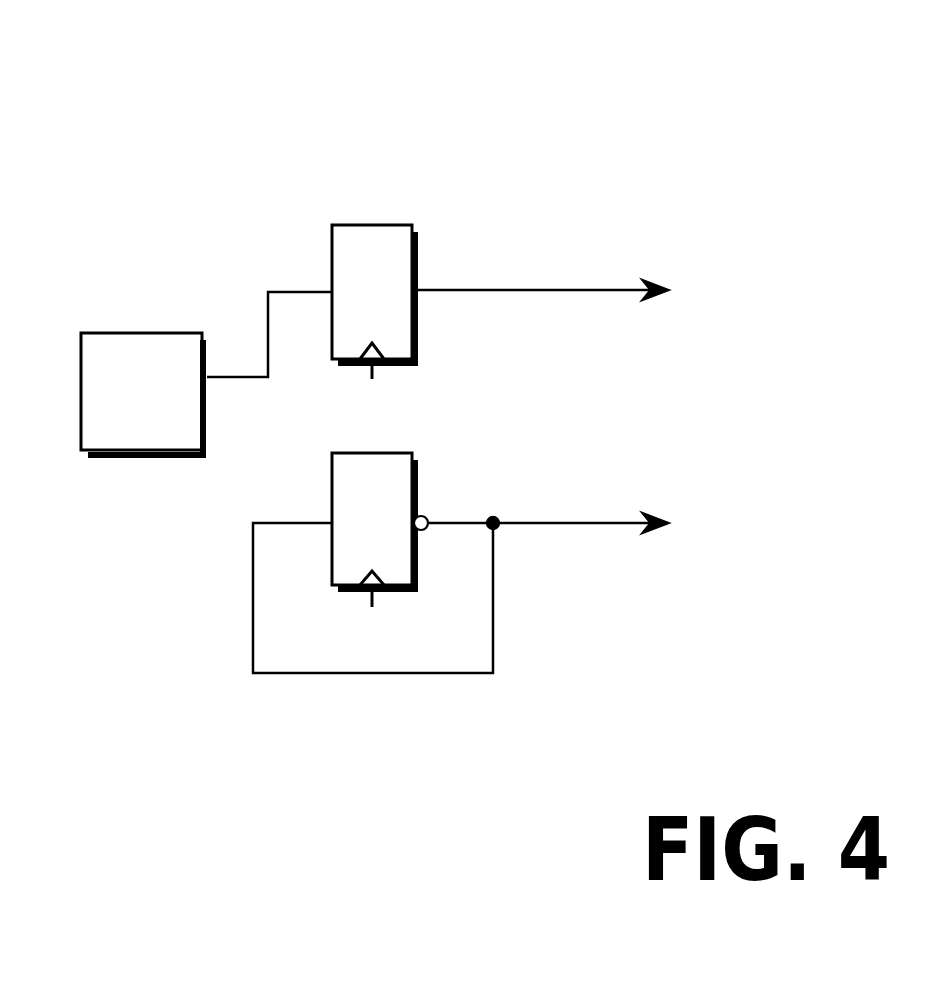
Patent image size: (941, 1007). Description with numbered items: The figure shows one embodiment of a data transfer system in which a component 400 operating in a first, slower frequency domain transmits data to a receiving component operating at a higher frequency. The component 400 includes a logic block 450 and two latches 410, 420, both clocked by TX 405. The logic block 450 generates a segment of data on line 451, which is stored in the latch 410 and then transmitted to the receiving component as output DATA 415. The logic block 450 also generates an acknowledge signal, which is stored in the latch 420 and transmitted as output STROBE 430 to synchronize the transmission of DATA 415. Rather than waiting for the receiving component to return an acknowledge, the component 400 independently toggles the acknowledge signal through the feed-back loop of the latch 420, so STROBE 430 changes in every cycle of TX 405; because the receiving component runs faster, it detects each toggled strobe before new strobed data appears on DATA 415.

The component 400 is at (235, 92).
The TX 405 is at (375, 505).
The latch 410 is at (395, 225).
The DATA 415 is at (564, 268).
The latch 420 is at (392, 453).
The STROBE 430 is at (587, 504).
The logic block 450 is at (155, 333).
The line 451 is at (269, 334).